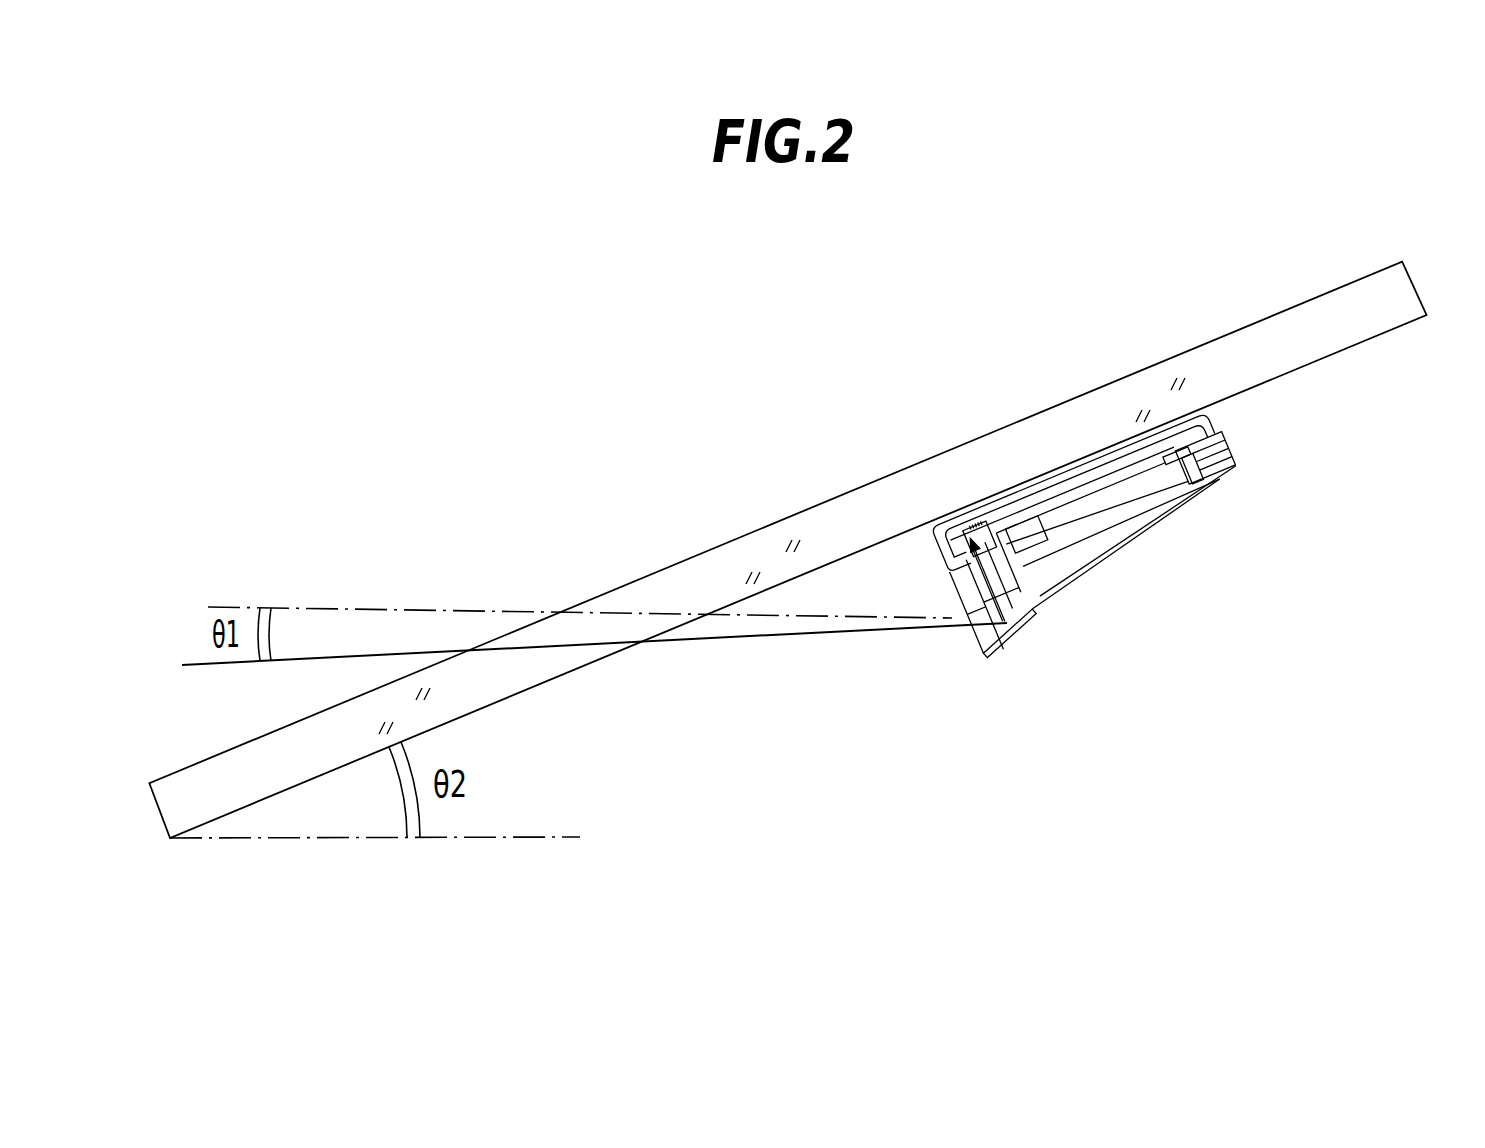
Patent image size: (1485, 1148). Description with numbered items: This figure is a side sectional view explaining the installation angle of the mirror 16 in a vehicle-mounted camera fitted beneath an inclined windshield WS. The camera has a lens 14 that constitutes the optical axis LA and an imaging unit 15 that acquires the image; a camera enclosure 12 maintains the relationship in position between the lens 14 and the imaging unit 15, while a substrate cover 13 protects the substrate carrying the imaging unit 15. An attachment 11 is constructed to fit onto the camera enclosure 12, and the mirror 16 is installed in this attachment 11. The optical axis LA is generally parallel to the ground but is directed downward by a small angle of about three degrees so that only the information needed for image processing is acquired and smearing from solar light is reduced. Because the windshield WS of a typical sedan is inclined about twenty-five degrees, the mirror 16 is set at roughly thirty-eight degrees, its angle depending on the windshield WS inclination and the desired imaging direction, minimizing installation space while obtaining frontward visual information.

The attachment 11 is at (1033, 612).
The camera enclosure 12 is at (938, 542).
The substrate cover 13 is at (1200, 490).
The lens 14 is at (957, 588).
The imaging unit 15 is at (967, 547).
The mirror 16 is at (978, 650).
The windshield WS is at (1360, 330).
The optical axis LA is at (802, 637).